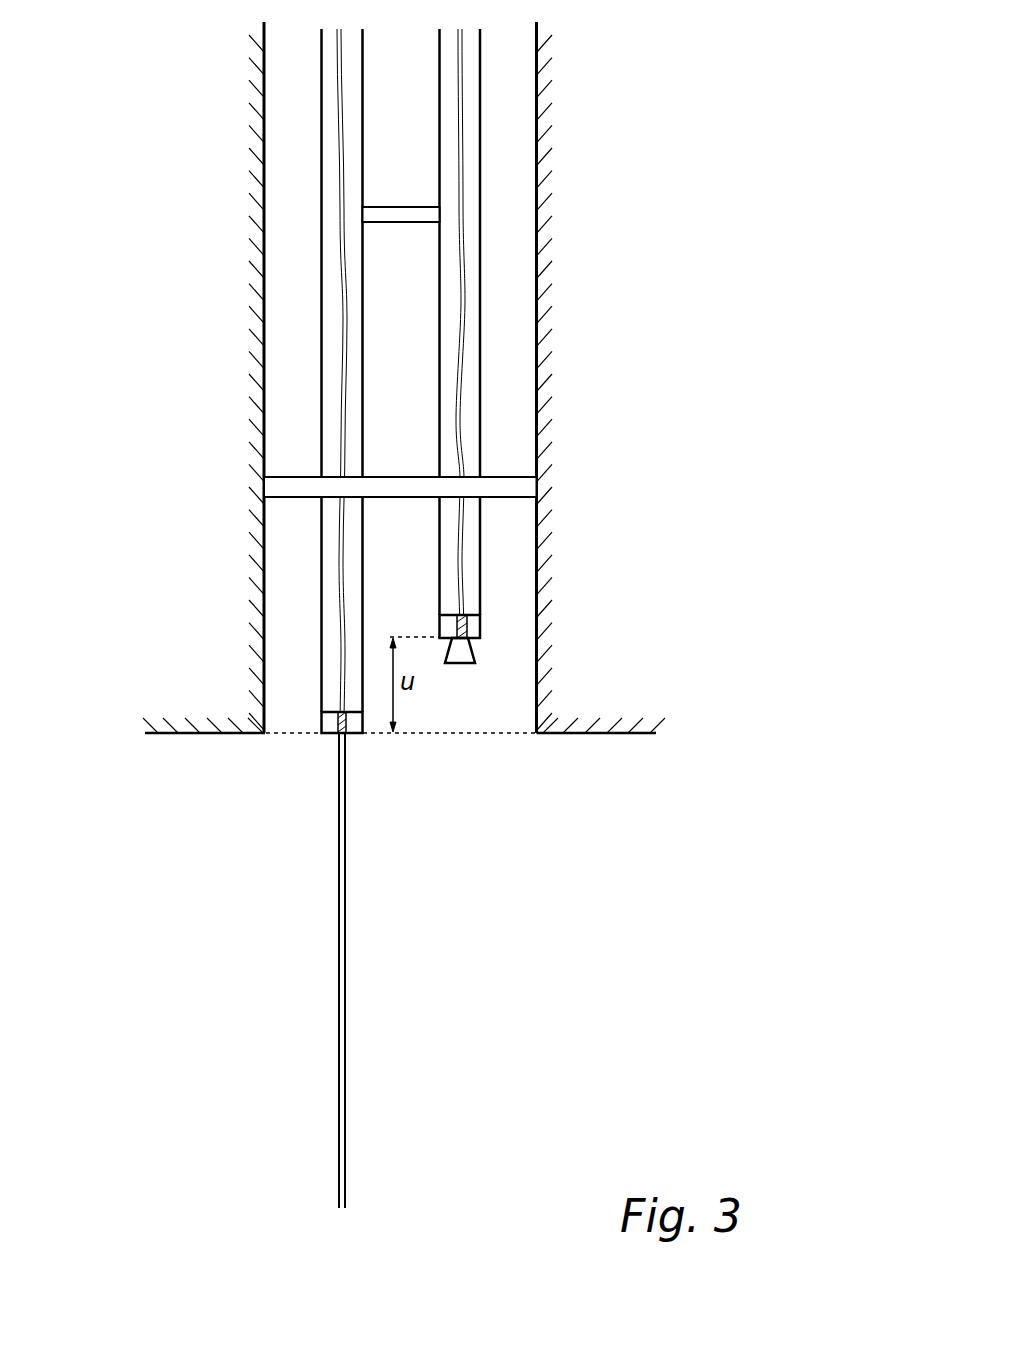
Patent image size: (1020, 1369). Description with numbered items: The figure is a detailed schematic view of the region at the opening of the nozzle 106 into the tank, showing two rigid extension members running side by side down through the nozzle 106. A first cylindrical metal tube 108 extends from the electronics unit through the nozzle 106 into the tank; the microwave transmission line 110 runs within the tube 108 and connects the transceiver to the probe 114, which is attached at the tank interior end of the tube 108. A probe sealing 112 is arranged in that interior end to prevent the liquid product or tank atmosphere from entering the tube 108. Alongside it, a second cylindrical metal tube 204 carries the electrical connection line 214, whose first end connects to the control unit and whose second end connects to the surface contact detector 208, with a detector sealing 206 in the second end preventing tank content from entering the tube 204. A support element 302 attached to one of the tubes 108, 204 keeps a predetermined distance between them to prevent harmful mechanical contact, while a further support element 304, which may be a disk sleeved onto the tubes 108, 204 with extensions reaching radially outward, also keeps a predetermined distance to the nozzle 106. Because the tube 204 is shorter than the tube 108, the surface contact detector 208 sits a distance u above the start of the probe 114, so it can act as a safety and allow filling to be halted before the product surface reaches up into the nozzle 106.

The nozzle 106 is at (537, 126).
The cylindrical metal tube 108 is at (322, 197).
The microwave transmission line 110 is at (340, 254).
The probe sealing 112 is at (332, 735).
The probe 114 is at (345, 946).
The cylindrical metal tube 204 is at (480, 305).
The electrical connection line 214 is at (460, 208).
The detector sealing 206 is at (481, 625).
The surface contact detector 208 is at (459, 665).
The support element 302 is at (423, 207).
The support element 304 is at (515, 477).